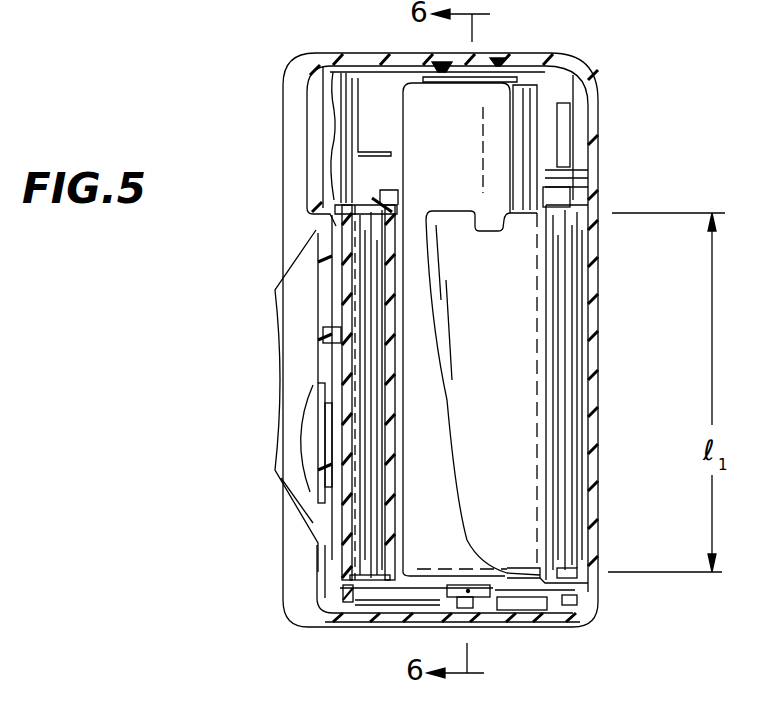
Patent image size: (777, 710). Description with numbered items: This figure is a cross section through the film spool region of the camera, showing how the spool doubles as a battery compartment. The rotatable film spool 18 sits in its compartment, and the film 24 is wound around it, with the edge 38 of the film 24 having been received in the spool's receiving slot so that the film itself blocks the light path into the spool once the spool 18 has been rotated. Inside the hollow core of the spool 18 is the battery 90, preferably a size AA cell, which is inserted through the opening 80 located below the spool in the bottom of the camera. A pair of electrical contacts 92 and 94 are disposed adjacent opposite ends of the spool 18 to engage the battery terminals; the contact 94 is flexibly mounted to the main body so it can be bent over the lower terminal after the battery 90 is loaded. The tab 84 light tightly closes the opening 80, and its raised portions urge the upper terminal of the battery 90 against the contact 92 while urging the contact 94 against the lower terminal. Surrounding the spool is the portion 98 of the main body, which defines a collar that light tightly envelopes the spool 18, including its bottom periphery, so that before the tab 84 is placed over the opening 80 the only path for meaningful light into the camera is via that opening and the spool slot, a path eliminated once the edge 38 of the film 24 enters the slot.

The film spool 18 is at (390, 190).
The film 24 is at (522, 287).
The edge of the film 38 is at (443, 360).
The opening 80 is at (557, 603).
The tab 84 is at (397, 618).
The battery 90 is at (468, 134).
The electrical contact 92 is at (476, 72).
The electrical contact 94 is at (468, 606).
The portion defining a collar 98 is at (380, 198).